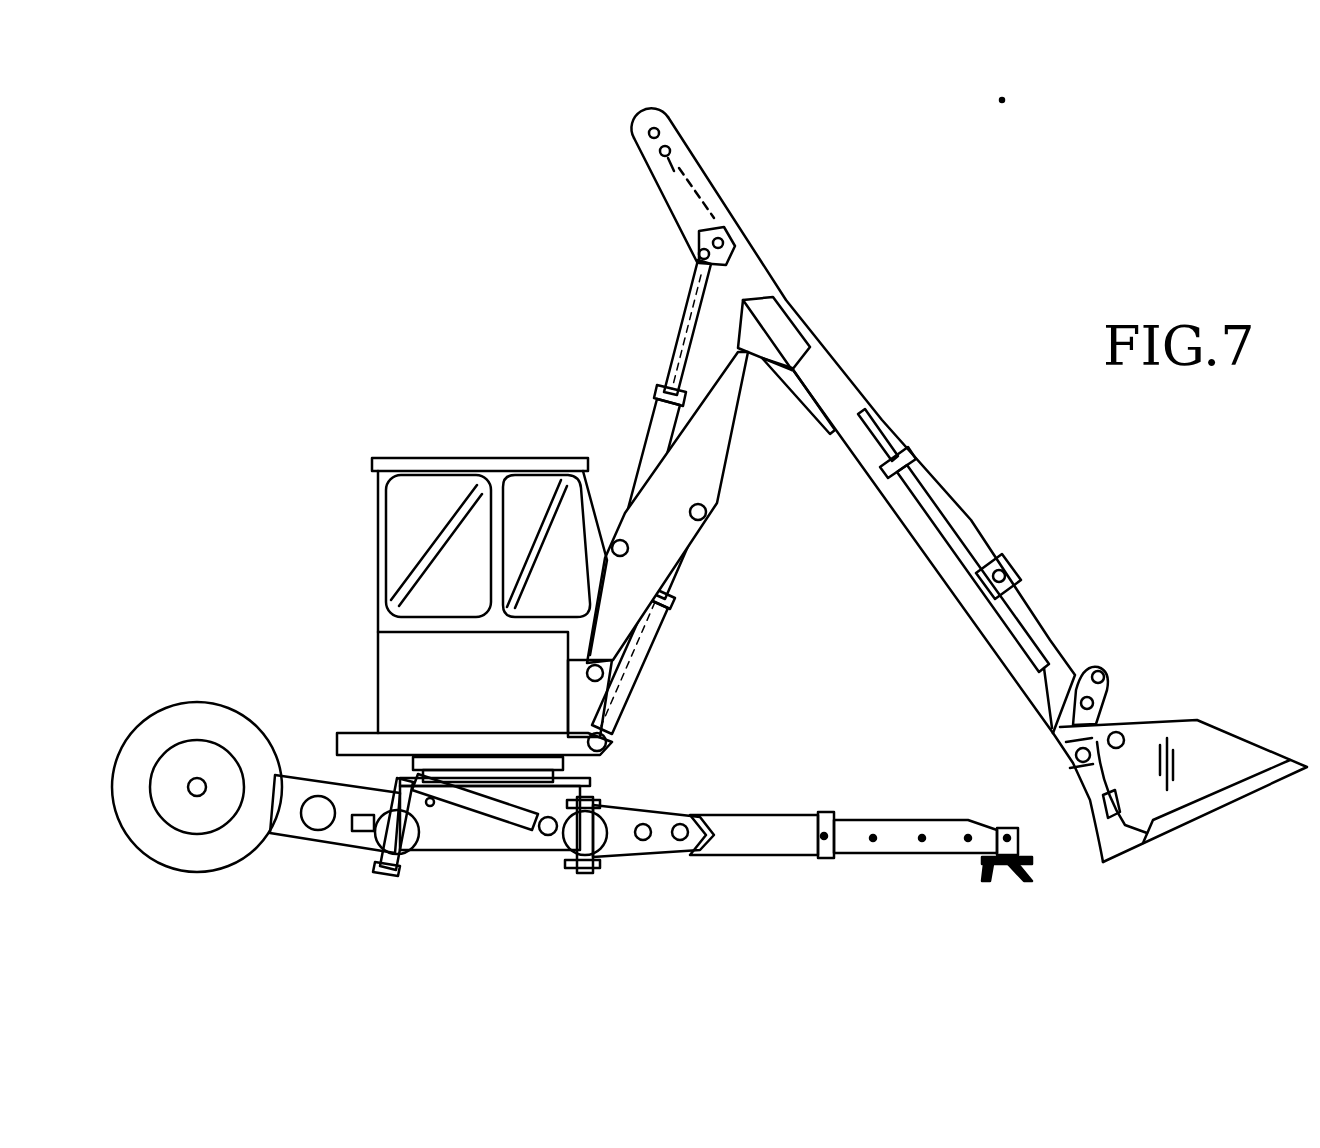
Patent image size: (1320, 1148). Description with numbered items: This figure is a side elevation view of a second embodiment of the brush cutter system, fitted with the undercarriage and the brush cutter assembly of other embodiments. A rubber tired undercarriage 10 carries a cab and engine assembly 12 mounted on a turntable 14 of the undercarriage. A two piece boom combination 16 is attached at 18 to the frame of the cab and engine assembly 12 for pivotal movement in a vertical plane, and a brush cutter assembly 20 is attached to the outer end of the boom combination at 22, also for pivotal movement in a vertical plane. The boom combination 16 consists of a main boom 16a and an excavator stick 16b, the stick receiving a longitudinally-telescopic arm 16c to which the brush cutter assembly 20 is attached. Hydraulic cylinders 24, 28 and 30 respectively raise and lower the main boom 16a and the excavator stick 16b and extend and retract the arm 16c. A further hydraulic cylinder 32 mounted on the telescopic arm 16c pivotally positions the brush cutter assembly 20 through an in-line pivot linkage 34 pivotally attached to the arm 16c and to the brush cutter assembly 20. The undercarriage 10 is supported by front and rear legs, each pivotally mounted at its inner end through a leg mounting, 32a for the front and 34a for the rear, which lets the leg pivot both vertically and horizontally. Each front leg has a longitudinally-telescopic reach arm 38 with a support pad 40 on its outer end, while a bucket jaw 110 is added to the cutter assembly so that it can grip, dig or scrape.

The undercarriage 10 is at (511, 860).
The cab and engine assembly 12 is at (489, 458).
The turntable 14 is at (337, 733).
The boom combination 16 is at (831, 420).
The main boom 16a is at (752, 388).
The excavator stick 16b is at (840, 365).
The telescopic arm 16c is at (968, 617).
The boom attachment point 18 is at (603, 676).
The brush cutter assembly 20 is at (1233, 729).
The brush cutter attachment point 22 is at (1076, 758).
The hydraulic cylinder 24 is at (658, 638).
The hydraulic cylinder 28 is at (654, 394).
The hydraulic cylinder 30 is at (700, 165).
The hydraulic cylinder / front leg 32 is at (1042, 631).
The front leg mounting 32a is at (590, 877).
The in-line pivot linkage / rear leg 34 is at (318, 843).
The rear leg mounting 34a is at (387, 877).
The telescopic reach arm 38 is at (912, 855).
The support pad 40 is at (989, 882).
The bucket jaw 110 is at (1086, 830).